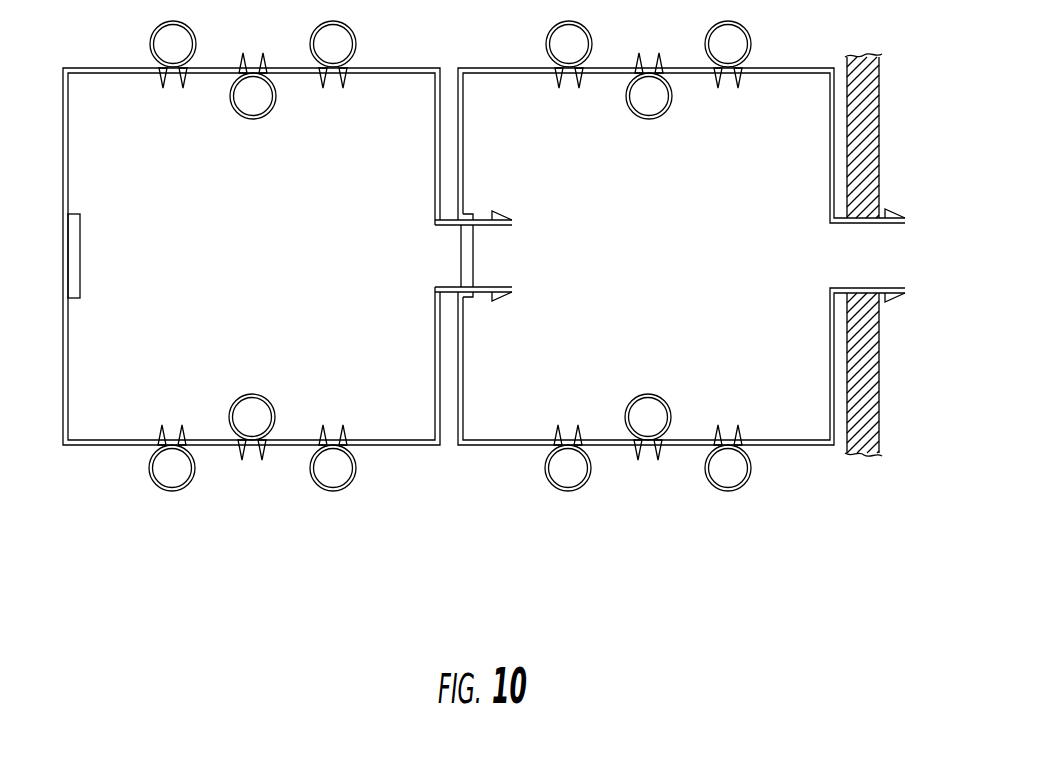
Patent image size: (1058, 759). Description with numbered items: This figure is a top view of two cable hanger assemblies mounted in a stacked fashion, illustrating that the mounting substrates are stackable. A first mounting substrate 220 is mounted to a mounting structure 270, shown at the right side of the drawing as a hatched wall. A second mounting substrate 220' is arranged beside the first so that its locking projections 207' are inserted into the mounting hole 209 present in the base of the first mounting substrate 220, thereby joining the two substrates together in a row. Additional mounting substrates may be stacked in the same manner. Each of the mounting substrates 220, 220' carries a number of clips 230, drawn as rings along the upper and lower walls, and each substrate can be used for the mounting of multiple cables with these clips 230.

The mounting substrate 220 is at (676, 279).
The second mounting substrate 220' is at (251, 303).
The clip 230 is at (170, 492).
The mounting hole 209 is at (488, 255).
The locking projection 207' is at (499, 285).
The mounting structure 270 is at (874, 160).